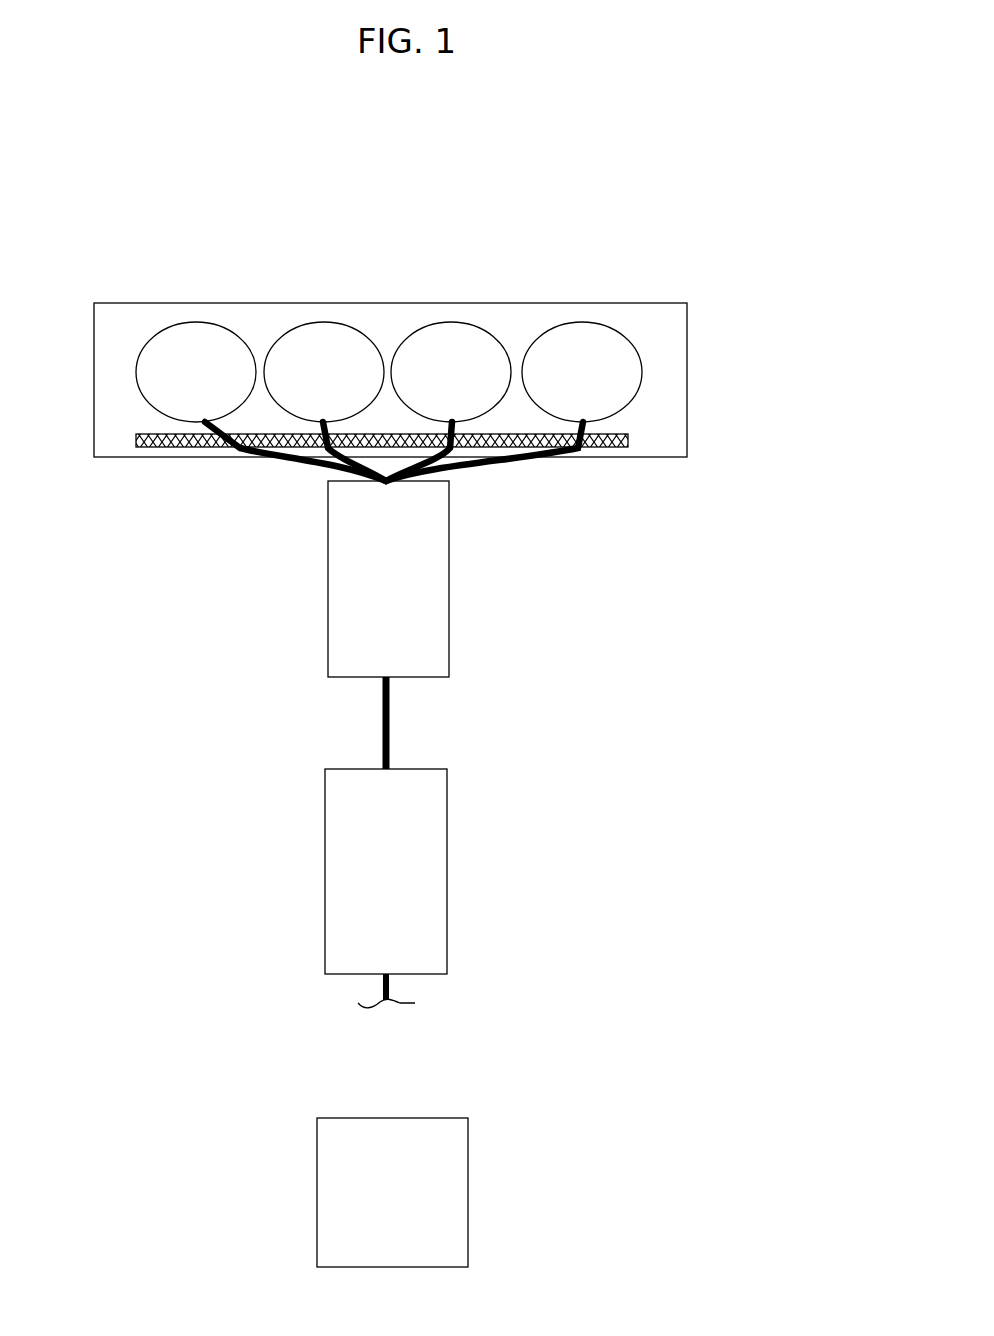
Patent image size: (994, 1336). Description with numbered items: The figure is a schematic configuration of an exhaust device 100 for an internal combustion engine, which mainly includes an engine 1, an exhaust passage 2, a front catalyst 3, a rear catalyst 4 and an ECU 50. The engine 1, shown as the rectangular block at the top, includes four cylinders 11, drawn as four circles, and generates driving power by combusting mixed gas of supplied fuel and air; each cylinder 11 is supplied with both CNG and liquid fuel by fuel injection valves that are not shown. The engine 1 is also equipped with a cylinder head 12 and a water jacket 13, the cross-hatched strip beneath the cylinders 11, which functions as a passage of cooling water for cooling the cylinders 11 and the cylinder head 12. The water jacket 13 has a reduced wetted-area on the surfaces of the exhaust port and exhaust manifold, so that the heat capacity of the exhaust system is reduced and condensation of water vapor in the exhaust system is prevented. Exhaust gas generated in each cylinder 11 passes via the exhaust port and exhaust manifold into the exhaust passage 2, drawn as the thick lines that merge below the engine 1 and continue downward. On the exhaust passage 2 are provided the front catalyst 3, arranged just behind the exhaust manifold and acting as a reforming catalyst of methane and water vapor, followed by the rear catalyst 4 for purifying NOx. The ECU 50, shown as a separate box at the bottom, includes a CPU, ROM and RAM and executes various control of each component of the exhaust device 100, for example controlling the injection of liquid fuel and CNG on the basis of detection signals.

The exhaust device 100 is at (410, 105).
The engine 1 is at (704, 239).
The cylinders 11 is at (210, 323).
The cylinder head 12 is at (687, 378).
The water jacket 13 is at (610, 443).
The exhaust passage 2 is at (388, 743).
The front catalyst 3 is at (449, 579).
The rear catalyst 4 is at (447, 872).
The ECU 50 is at (393, 1118).